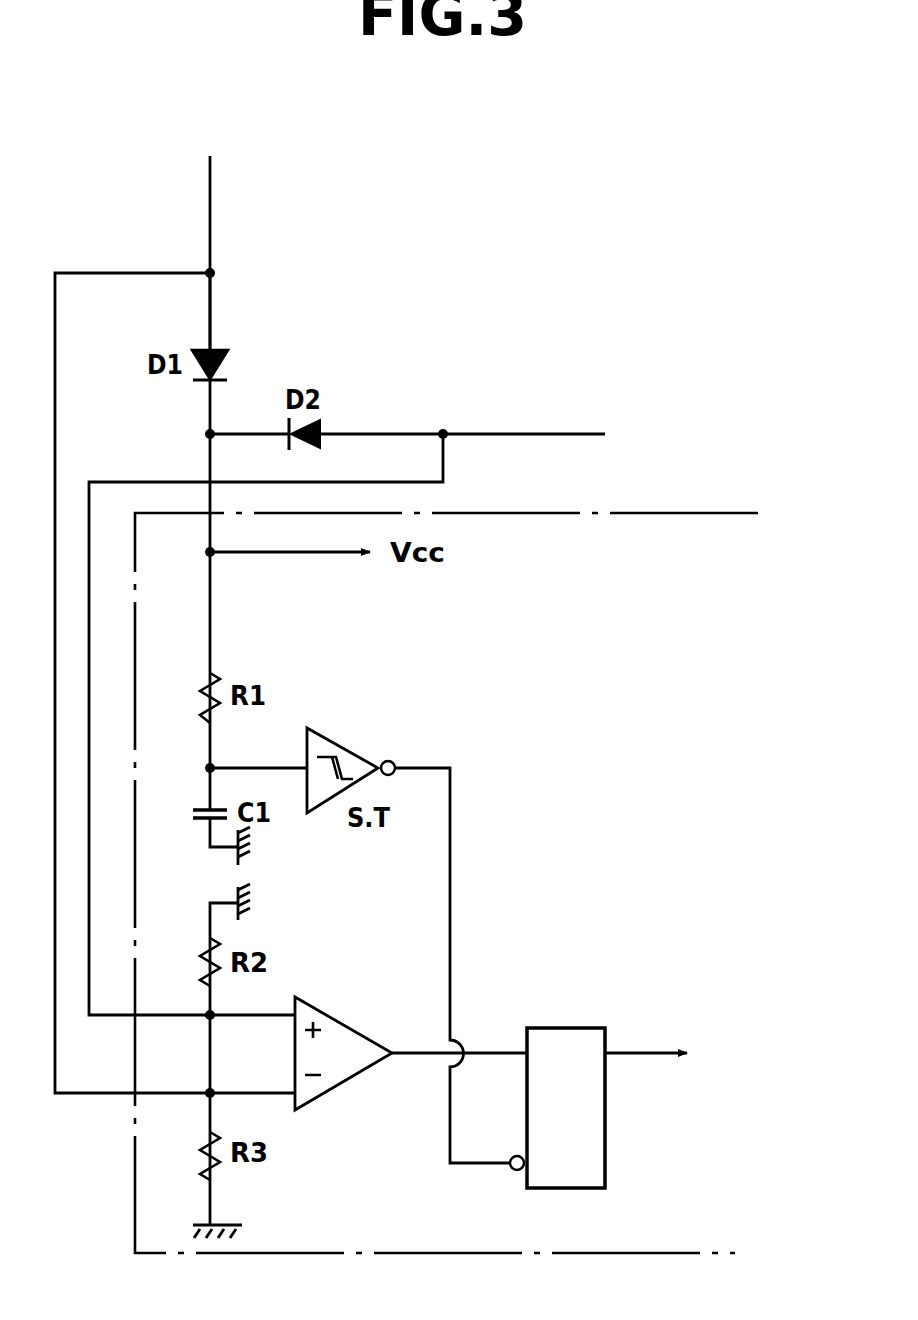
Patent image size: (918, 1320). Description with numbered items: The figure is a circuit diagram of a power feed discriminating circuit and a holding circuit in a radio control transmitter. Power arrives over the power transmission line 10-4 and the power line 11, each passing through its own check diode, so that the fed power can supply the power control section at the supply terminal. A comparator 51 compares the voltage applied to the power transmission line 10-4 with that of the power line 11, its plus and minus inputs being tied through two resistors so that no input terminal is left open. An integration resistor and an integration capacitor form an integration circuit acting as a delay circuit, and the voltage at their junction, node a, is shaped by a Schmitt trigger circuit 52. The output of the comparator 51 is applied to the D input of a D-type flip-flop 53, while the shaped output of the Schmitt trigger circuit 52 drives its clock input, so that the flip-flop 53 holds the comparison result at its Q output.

The power transmission line 10-4 is at (212, 312).
The power line 11 is at (393, 434).
The node a is at (240, 750).
The comparator 51 is at (330, 1015).
The Schmitt trigger circuit 52 is at (350, 747).
The D-type flip-flop 53 is at (572, 1028).